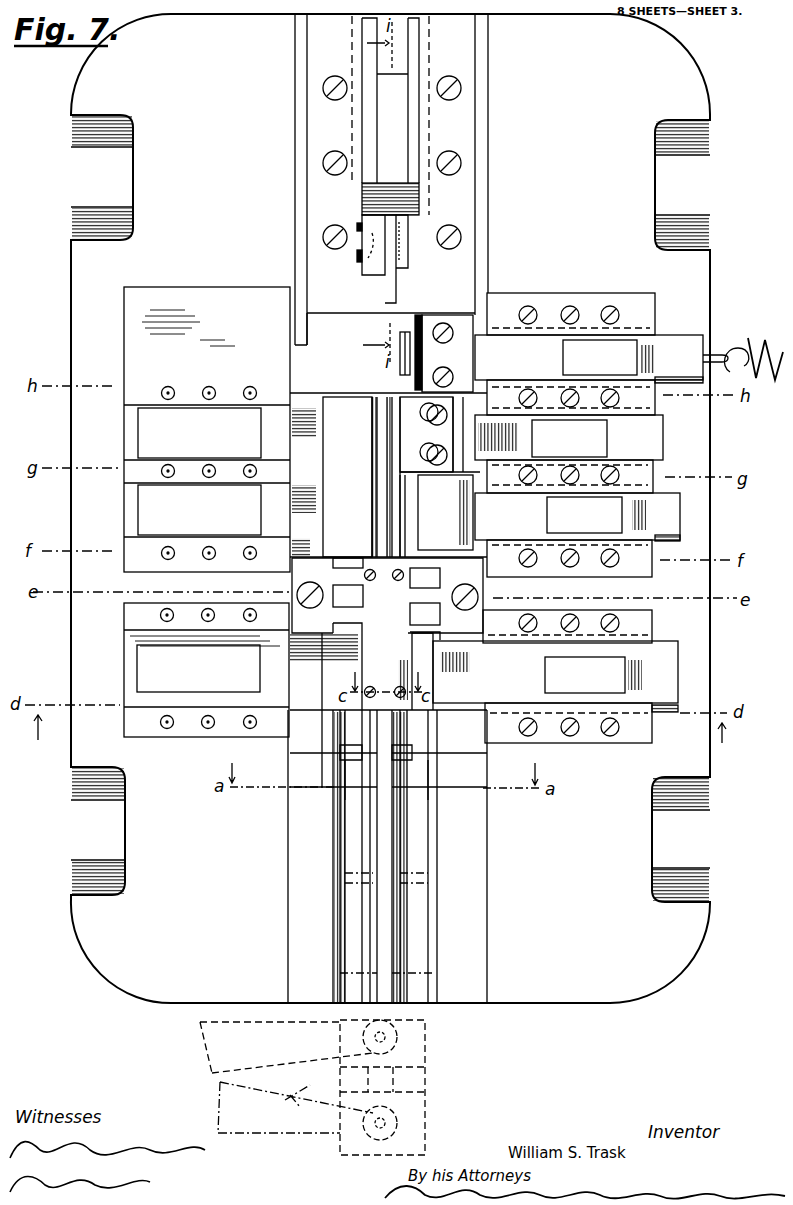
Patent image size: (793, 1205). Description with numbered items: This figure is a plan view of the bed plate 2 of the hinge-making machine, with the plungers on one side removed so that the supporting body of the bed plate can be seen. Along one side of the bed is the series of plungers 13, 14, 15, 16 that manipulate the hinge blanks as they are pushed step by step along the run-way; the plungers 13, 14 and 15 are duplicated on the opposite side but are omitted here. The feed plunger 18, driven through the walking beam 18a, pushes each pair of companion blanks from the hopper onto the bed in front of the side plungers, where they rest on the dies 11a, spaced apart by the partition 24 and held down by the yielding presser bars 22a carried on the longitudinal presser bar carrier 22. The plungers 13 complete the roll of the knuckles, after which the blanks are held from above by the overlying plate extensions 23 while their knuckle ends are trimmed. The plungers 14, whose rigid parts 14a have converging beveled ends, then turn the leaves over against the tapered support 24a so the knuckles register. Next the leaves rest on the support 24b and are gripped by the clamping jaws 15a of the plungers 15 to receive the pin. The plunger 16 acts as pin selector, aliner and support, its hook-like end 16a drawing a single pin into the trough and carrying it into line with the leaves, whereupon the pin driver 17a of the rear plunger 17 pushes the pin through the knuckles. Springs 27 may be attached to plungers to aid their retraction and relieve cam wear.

The bed plate 2 is at (390, 508).
The die 11a is at (515, 806).
The plunger 13 is at (555, 676).
The plunger 14 is at (577, 535).
The rigid part 14a is at (436, 516).
The plunger 15 is at (569, 454).
The clamping jaw 15a is at (440, 434).
The plunger 16 is at (589, 354).
The hook-like end 16a is at (392, 368).
The plunger 17 is at (372, 237).
The pin driver 17a is at (360, 283).
The feed plunger 18 is at (420, 1123).
The walking beam 18a is at (503, 920).
The presser bar carrier 22 is at (388, 666).
The presser bar 22a is at (500, 753).
The plate extension 23 is at (387, 596).
The partition 24 is at (385, 827).
The support 24a is at (392, 525).
The support 24b is at (387, 447).
The spring 27 is at (743, 348).